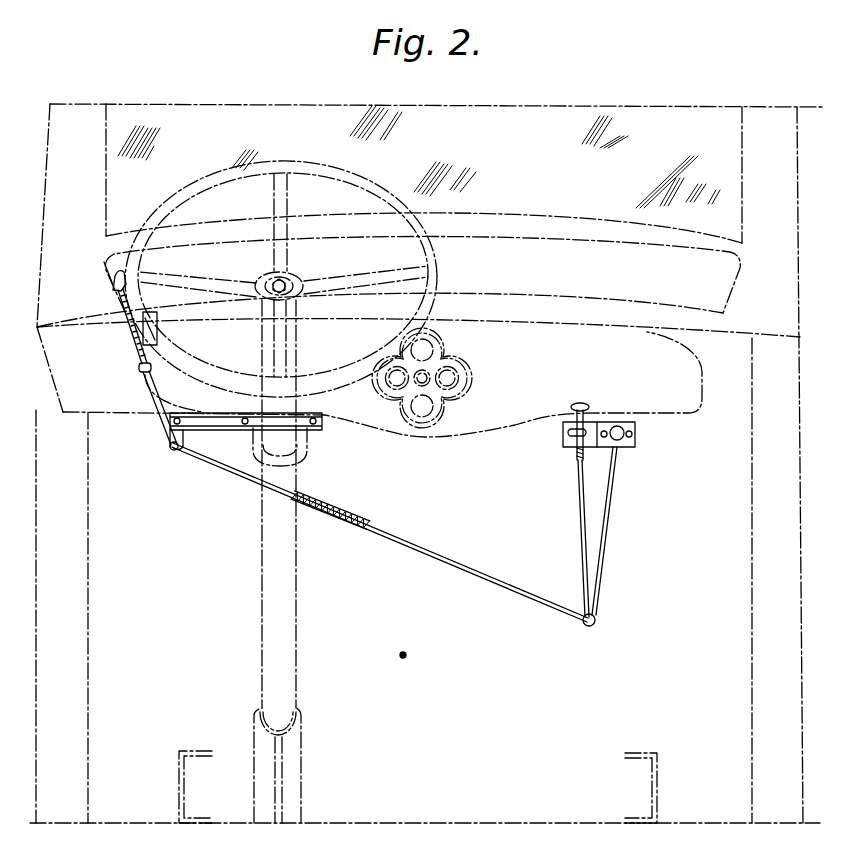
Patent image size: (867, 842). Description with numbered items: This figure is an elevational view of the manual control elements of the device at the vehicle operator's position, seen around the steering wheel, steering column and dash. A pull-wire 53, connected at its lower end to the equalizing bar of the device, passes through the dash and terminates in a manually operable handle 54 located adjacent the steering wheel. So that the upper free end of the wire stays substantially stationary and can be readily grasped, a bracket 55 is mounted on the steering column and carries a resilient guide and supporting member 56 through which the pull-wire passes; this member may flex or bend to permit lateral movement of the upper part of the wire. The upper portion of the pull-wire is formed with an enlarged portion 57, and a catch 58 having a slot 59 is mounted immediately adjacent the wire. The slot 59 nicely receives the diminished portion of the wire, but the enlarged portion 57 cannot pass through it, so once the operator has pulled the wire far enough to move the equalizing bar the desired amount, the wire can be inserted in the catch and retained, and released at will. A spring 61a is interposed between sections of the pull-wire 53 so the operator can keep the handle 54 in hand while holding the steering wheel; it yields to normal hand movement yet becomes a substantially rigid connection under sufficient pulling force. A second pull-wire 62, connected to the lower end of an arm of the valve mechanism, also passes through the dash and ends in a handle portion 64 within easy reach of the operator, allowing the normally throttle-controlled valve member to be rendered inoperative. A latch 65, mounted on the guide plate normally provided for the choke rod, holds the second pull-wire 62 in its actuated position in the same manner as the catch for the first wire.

The pull-wire 53 is at (470, 568).
The handle 54 is at (112, 284).
The bracket 55 is at (214, 424).
The resilient guide and supporting member 56 is at (158, 394).
The enlarged portion 57 is at (147, 340).
The catch 58 is at (152, 365).
The slot 59 is at (158, 322).
The spring 61a is at (342, 507).
The second pull-wire 62 is at (580, 498).
The handle portion 64 is at (585, 403).
The latch 65 is at (563, 439).